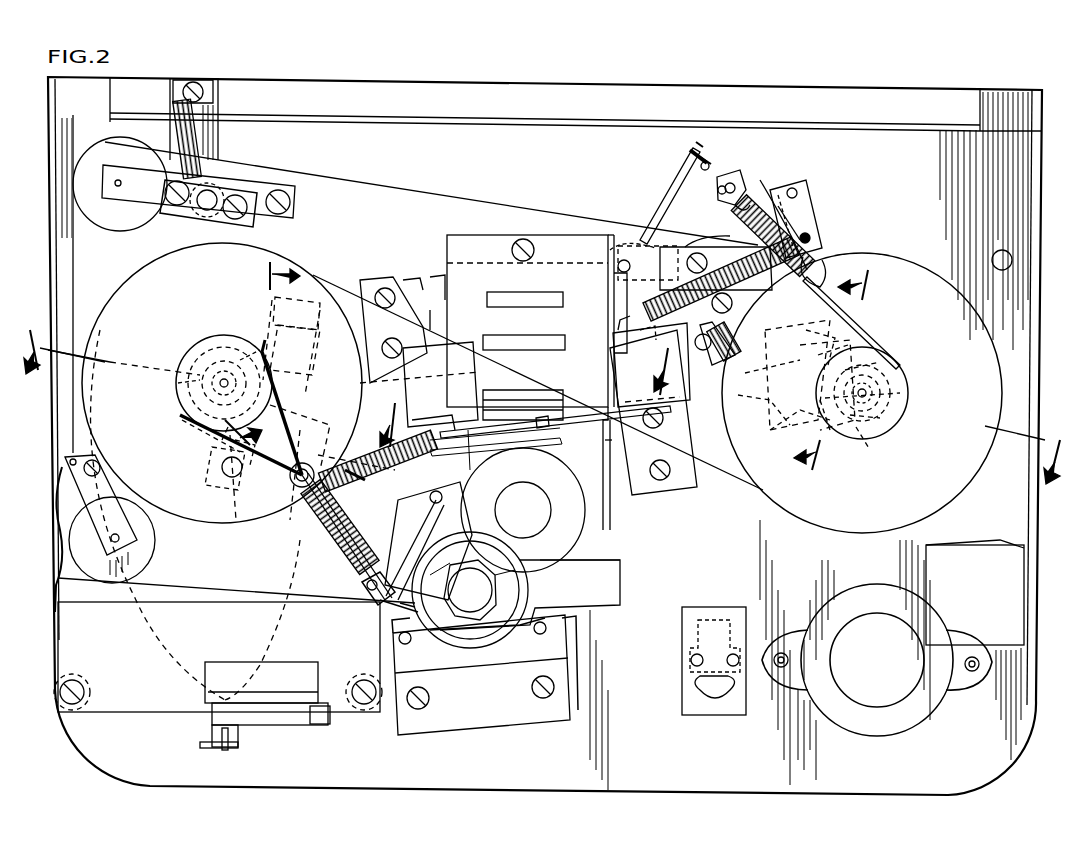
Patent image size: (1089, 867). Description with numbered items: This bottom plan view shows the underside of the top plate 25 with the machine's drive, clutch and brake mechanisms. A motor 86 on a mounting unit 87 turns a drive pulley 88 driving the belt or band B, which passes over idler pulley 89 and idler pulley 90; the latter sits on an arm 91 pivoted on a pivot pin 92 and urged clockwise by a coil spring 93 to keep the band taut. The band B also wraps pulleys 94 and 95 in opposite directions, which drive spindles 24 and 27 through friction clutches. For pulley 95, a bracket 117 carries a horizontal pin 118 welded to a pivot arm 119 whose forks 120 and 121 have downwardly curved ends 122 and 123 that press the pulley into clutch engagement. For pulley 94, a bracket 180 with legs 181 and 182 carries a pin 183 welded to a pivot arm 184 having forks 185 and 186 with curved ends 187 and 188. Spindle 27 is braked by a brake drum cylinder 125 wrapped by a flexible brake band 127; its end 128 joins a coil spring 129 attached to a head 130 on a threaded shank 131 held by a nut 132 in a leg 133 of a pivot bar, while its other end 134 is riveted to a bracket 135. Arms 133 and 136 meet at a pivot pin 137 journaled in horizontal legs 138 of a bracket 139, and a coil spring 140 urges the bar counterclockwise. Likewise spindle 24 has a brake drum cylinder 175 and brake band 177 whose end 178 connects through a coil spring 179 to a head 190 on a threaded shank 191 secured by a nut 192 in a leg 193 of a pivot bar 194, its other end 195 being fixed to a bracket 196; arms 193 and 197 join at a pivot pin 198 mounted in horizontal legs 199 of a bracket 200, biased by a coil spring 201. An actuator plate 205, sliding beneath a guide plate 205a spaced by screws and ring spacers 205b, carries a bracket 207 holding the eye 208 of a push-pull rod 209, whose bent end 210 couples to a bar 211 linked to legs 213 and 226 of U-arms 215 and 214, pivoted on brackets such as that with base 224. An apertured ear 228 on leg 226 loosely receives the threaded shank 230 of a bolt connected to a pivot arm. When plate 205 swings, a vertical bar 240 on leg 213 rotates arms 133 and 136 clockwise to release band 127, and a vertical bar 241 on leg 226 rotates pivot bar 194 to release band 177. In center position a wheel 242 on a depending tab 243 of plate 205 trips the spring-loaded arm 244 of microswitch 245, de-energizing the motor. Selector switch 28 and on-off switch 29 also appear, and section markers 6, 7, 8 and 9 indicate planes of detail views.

The top plate 25 is at (634, 716).
The belt or band B is at (486, 203).
The idler pulley 90 is at (103, 155).
The arm 91 is at (150, 212).
The pivot pin 92 is at (212, 192).
The coil spring 93 is at (205, 138).
The pulley 95 is at (170, 322).
The pulley 94 is at (966, 372).
The downwardly curved end portion 123 is at (224, 383).
The downwardly curved end portion 122 is at (240, 360).
The fork 120 is at (258, 346).
The spindle 27 is at (170, 370).
The brake drum cylinder 125 is at (176, 384).
The fork 121 is at (182, 420).
The bracket 117 is at (275, 310).
The horizontal pin 118 is at (295, 347).
The pivot arm 119 is at (305, 360).
The flexible brake band 127 is at (286, 420).
The coil spring 140 is at (350, 440).
The bracket 139 is at (352, 456).
The bracket 207 is at (212, 470).
The brake band end 128 is at (293, 484).
The guide 208 is at (262, 505).
The section line 8 is at (257, 353).
The coil spring 129 is at (325, 536).
The head 130 is at (358, 568).
The bracket 135 is at (350, 545).
The nut 132 is at (368, 590).
The threaded shank 131 is at (395, 612).
The brake band end 134 is at (352, 490).
The leg of pivot bar 133 is at (440, 533).
The pivot pin 137 is at (428, 498).
The section line 6 is at (208, 388).
The arm of pivot bar 136 is at (490, 462).
The horizontal legs 138 is at (523, 510).
The drive pulley 88 is at (482, 580).
The motor 86 is at (480, 630).
The mounting unit 87 is at (576, 662).
The arm of pivot bar 197 is at (620, 310).
The pivot pin 198 is at (616, 272).
The horizontal legs 199 is at (656, 272).
The bracket 200 is at (684, 246).
The coil spring 201 is at (708, 282).
The U-arm 215 is at (444, 393).
The vertical bar 240 is at (420, 391).
The leg 213 is at (444, 407).
The bent end 210 is at (536, 420).
The bar 211 is at (550, 428).
The push-pull rod 209 is at (520, 446).
The U-arm 214 is at (672, 378).
The leg 226 is at (633, 343).
The vertical bar 241 is at (648, 339).
The base 224 is at (670, 482).
The section line 7 is at (863, 416).
The leg 193 is at (668, 208).
The threaded shank 191 is at (700, 157).
The nut 192 is at (700, 170).
The pivot bar 194 is at (670, 220).
The head 190 is at (738, 180).
The brake band end 195 is at (795, 268).
The bracket 196 is at (808, 192).
The coil spring 179 is at (800, 222).
The brake band end 178 is at (822, 268).
The flexible brake band 177 is at (852, 334).
The bracket 180 is at (800, 326).
The downwardly depending leg 182 is at (825, 340).
The threaded shank 230 is at (712, 342).
The apertured ear 228 is at (725, 356).
The horizontal pin 183 is at (772, 374).
The pivot arm 184 is at (768, 400).
The downwardly depending leg 181 is at (790, 420).
The fork 186 is at (888, 356).
The downwardly curved end portion 188 is at (866, 370).
The downwardly curved end portion 187 is at (850, 412).
The fork 185 is at (851, 412).
The spindle 24 is at (880, 396).
The brake drum cylinder 175 is at (905, 422).
The section line 9 is at (838, 370).
The selector switch 28 is at (868, 584).
The on-off switch 29 is at (746, 622).
The idler pulley 89 is at (94, 560).
The actuator plate 205 is at (140, 594).
The screws and ring spacers 205b is at (92, 684).
The guide plate 205a is at (130, 700).
The microswitch 245 is at (262, 698).
The downwardly depending tab 243 is at (210, 736).
The wheel or disc 242 is at (216, 750).
The spring-loaded arm 244 is at (226, 750).